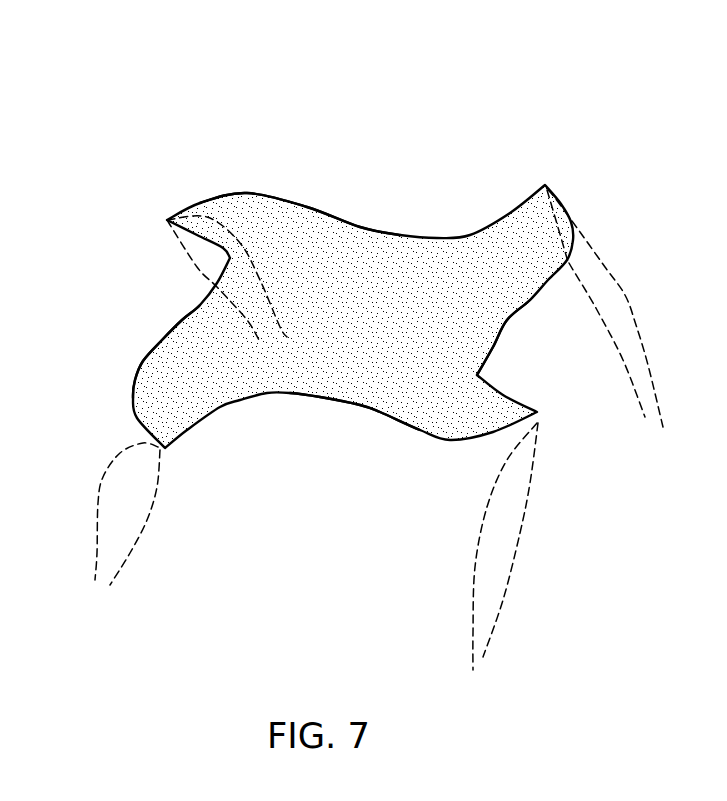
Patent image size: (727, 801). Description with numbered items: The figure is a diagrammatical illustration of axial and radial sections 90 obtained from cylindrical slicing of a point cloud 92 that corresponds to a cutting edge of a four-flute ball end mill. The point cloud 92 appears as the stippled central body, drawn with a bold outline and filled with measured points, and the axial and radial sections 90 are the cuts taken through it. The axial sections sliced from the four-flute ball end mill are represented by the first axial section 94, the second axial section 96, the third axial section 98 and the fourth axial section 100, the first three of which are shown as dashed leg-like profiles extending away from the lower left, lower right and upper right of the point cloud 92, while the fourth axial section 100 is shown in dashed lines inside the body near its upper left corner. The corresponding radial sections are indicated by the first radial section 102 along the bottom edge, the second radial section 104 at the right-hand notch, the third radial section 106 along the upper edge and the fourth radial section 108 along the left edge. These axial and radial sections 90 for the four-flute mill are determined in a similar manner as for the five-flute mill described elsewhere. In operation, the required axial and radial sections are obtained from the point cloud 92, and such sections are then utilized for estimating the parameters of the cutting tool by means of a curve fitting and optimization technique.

The axial and radial sections 90 is at (165, 58).
The point cloud 92 is at (412, 240).
The axial section 94 is at (100, 482).
The axial section 96 is at (525, 513).
The axial section 98 is at (625, 297).
The axial section 100 is at (197, 267).
The radial section 102 is at (362, 420).
The radial section 104 is at (503, 335).
The radial section 106 is at (308, 208).
The radial section 108 is at (144, 360).